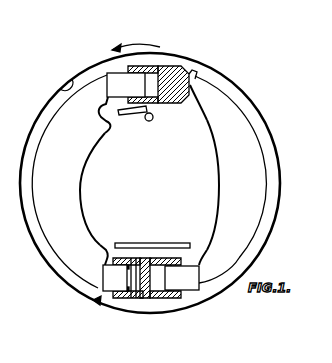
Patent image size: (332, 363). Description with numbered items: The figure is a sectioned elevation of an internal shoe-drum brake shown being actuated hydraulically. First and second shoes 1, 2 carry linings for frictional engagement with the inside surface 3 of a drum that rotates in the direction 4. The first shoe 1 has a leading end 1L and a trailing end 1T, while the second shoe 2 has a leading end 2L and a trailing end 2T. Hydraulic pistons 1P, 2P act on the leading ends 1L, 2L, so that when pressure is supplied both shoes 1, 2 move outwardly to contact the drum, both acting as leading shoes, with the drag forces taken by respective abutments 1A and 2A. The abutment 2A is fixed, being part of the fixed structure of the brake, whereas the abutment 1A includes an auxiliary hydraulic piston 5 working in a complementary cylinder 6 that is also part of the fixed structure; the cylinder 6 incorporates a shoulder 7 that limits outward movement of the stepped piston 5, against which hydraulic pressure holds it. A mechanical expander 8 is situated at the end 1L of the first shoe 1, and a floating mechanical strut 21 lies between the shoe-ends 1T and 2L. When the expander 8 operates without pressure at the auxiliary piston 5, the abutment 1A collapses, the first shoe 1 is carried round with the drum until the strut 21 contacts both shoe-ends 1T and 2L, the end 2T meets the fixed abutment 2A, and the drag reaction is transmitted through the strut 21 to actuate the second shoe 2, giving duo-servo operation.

The first shoe 1 is at (60, 190).
The leading end of first shoe 1L is at (84, 129).
The trailing end of first shoe 1T is at (88, 265).
The hydraulic piston 1P is at (118, 78).
The abutment 1A is at (95, 302).
The second shoe 2 is at (242, 189).
The trailing end of second shoe 2T is at (230, 132).
The leading end of second shoe 2L is at (226, 265).
The abutment 2A is at (198, 72).
The hydraulic piston 2P is at (190, 286).
The inside surface of drum 3 is at (68, 86).
The direction of drum rotation 4 is at (136, 40).
The auxiliary hydraulic piston 5 is at (133, 299).
The cylinder 6 is at (145, 299).
The shoulder 7 is at (116, 299).
The mechanical expander 8 is at (133, 120).
The mechanical strut 21 is at (144, 242).